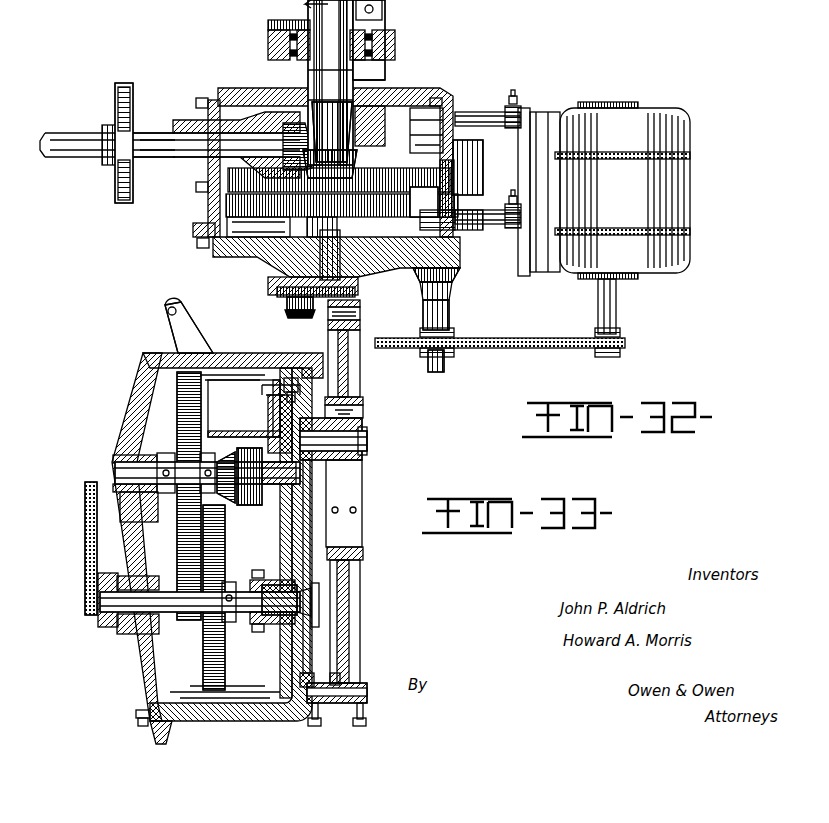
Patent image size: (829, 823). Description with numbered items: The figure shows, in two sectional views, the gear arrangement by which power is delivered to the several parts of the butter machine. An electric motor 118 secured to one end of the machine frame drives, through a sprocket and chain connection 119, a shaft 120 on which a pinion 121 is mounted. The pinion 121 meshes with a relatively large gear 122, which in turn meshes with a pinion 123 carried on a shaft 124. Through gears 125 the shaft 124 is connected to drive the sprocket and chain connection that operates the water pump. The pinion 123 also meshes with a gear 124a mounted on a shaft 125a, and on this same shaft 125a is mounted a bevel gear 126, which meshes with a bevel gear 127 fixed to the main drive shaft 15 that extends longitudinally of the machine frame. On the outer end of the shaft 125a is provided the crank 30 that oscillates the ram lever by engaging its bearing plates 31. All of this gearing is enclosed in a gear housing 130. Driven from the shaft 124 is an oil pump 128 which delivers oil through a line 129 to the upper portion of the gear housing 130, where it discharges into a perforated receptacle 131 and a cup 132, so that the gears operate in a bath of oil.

In FIG. 32, the main drive shaft 15 is at (73, 148).
In FIG. 32, the crank 30 is at (326, 38).
In FIG. 33, the crank 30 is at (350, 421).
In FIG. 32, the bearing plates 31 is at (380, 52).
In FIG. 33, the bearing plates 31 is at (345, 571).
In FIG. 32, the electric motor 118 is at (667, 202).
In FIG. 32, the sprocket and chain connection 119 is at (515, 349).
In FIG. 32, the shaft 120 is at (440, 362).
In FIG. 32, the pinion 121 is at (452, 174).
In FIG. 32, the gear 122 is at (398, 172).
In FIG. 33, the pinion 123 is at (190, 613).
In FIG. 33, the shaft 124 is at (114, 626).
In FIG. 33, the gear 124a is at (180, 443).
In FIG. 32, the gears 125 is at (318, 322).
In FIG. 33, the gears 125 is at (100, 618).
In FIG. 32, the shaft 125a is at (336, 112).
In FIG. 33, the shaft 125a is at (132, 478).
In FIG. 32, the bevel gear 126 is at (350, 152).
In FIG. 33, the bevel gear 126 is at (232, 460).
In FIG. 32, the bevel gear 127 is at (300, 128).
In FIG. 33, the oil pump 128 is at (300, 597).
In FIG. 33, the oil line 129 is at (308, 530).
In FIG. 32, the gear housing 130 is at (220, 246).
In FIG. 33, the gear housing 130 is at (144, 358).
In FIG. 33, the perforated receptacle 131 is at (241, 410).
In FIG. 33, the cup 132 is at (366, 438).